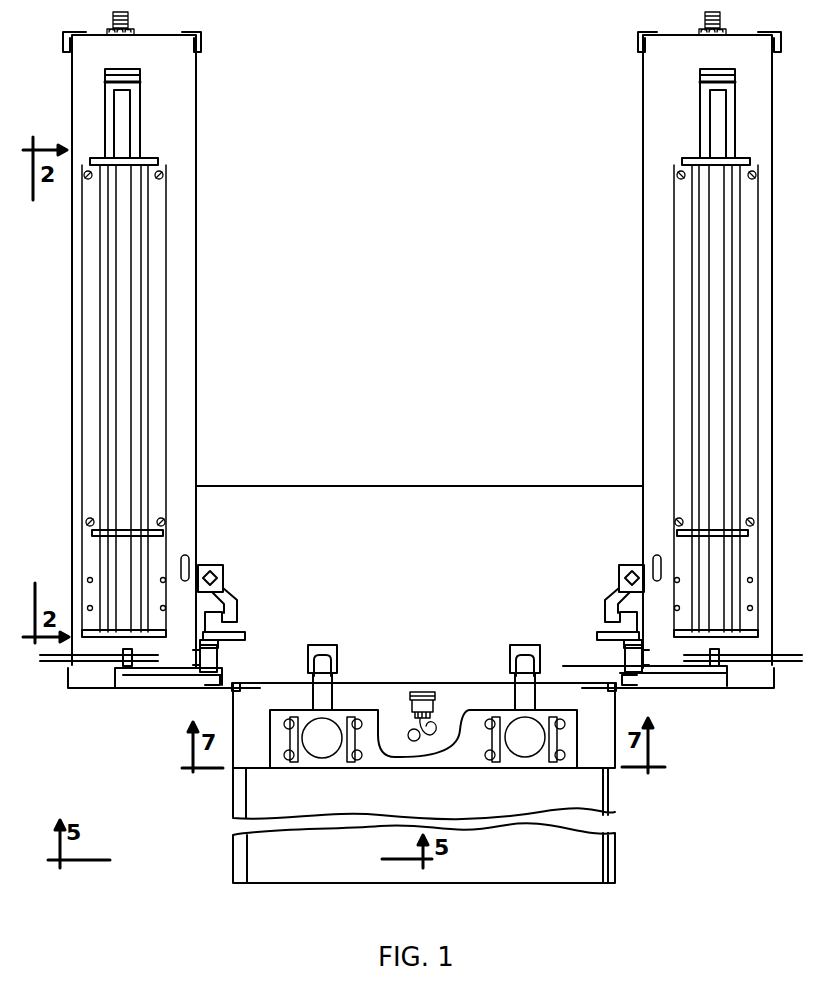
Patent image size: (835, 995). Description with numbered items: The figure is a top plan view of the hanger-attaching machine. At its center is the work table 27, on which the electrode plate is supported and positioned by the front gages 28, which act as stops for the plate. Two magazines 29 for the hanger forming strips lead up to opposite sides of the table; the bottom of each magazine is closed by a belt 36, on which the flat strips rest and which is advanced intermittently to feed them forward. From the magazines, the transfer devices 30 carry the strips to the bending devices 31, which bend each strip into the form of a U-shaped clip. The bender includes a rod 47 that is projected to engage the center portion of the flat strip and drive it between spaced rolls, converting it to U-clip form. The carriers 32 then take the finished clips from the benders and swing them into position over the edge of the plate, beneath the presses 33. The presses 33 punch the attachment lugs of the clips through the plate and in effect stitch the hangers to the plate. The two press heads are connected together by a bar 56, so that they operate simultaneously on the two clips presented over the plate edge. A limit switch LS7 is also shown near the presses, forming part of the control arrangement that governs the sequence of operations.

The work table 27 is at (528, 872).
The front gages 28 is at (232, 690).
The magazines 29 is at (72, 290).
The transfer devices 30 is at (213, 562).
The bending devices 31 is at (218, 664).
The carriers 32 is at (330, 650).
The presses 33 is at (312, 750).
The belt 36 is at (133, 415).
The rod 47 is at (55, 662).
The bar 56 is at (378, 763).
The limit switch LS7 is at (441, 715).